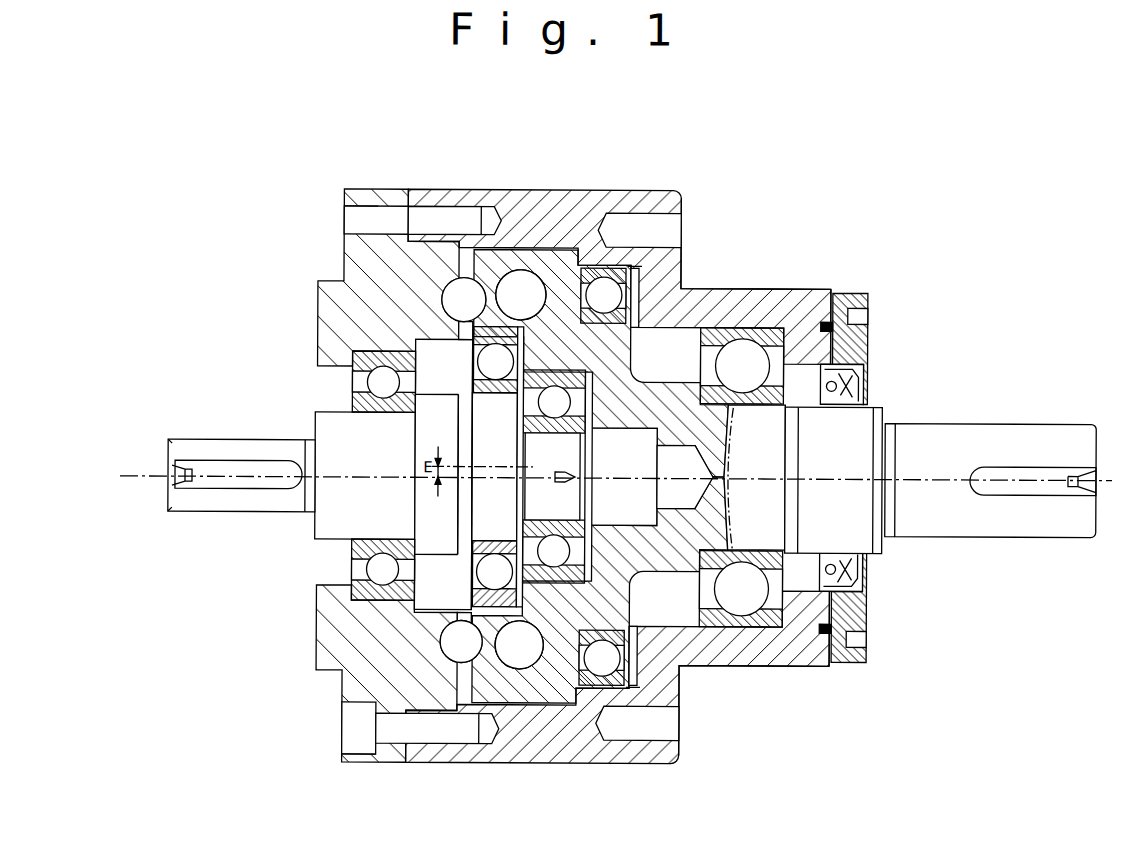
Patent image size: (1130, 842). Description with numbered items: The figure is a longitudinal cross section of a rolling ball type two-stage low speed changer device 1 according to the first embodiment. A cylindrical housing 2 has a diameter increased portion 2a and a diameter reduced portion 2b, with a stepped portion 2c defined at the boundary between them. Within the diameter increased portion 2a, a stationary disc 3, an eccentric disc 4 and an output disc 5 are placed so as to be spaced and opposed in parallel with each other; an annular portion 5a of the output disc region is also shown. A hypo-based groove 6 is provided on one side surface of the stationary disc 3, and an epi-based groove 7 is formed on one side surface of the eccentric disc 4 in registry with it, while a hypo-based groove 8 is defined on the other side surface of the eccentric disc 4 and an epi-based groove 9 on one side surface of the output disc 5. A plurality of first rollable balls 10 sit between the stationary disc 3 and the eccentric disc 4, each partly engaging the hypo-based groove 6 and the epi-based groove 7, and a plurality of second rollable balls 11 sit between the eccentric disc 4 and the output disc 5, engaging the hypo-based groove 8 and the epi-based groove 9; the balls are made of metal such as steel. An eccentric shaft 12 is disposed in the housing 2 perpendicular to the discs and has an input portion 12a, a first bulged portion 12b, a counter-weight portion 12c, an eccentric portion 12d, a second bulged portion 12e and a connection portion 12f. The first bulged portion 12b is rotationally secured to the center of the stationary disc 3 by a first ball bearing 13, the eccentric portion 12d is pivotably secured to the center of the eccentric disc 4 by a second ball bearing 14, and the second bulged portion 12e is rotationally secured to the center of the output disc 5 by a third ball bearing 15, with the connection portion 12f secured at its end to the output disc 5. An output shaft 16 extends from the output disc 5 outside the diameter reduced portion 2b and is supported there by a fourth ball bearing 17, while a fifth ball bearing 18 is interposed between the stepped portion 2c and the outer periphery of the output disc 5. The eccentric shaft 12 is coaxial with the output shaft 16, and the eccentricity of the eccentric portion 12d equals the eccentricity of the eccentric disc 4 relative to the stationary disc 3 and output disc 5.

The rolling ball type two-stage low speed changer device 1 is at (577, 441).
The cylindrical housing 2 is at (568, 215).
The diameter increased portion 2a is at (655, 190).
The diameter reduced portion 2b is at (732, 288).
The stepped portion 2c is at (636, 200).
The stationary disc 3 is at (343, 290).
The eccentric disc 4 is at (467, 240).
The output disc 5 is at (540, 240).
The bearing of external gear 5a is at (590, 235).
The hypo-based groove 6 is at (445, 258).
The epi-based groove 7 is at (462, 278).
The hypo-based groove 8 is at (487, 272).
The epi-based groove 9 is at (545, 278).
The first rollable balls 10 is at (460, 303).
The second rollable balls 11 is at (527, 288).
The eccentric shaft 12 is at (242, 467).
The input portion 12a is at (275, 506).
The first bulged portion 12b is at (335, 524).
The counter-weight portion 12c is at (345, 670).
The eccentric portion 12d is at (378, 762).
The second bulged portion 12e is at (678, 683).
The connection portion 12f is at (740, 670).
The first ball bearing 13 is at (358, 403).
The second ball bearing 14 is at (420, 710).
The third ball bearing 15 is at (568, 506).
The output shaft 16 is at (853, 446).
The fourth ball bearing 17 is at (764, 330).
The fifth ball bearing 18 is at (620, 275).